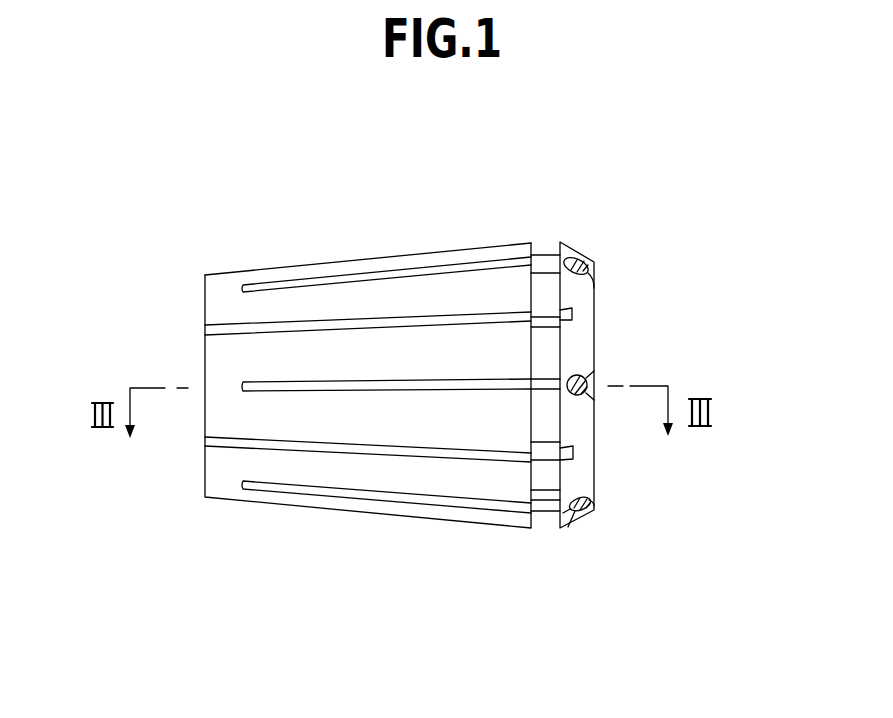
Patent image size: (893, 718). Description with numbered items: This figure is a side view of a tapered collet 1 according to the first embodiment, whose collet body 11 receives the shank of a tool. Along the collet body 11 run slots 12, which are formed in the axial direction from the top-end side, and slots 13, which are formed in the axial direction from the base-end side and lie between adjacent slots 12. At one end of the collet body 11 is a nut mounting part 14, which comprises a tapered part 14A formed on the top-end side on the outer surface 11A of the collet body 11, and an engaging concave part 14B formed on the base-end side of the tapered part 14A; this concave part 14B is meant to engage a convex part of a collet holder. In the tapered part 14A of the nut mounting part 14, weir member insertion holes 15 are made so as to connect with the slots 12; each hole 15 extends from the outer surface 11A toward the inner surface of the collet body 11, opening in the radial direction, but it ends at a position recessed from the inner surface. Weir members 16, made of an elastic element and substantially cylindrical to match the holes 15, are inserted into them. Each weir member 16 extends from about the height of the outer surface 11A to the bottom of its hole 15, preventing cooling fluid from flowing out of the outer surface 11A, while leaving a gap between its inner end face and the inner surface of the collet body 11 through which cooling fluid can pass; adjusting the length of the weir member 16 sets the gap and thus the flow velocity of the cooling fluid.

The tapered collet 1 is at (700, 180).
The collet body 11 is at (222, 287).
The outer surface 11A is at (253, 272).
The slots 12 is at (377, 270).
The slots 13 is at (217, 335).
The nut mounting part 14 is at (659, 143).
The tapered part 14A is at (577, 245).
The engaging concave part 14B is at (545, 255).
The weir member insertion hole 15 is at (590, 280).
The weir member 16 is at (600, 258).